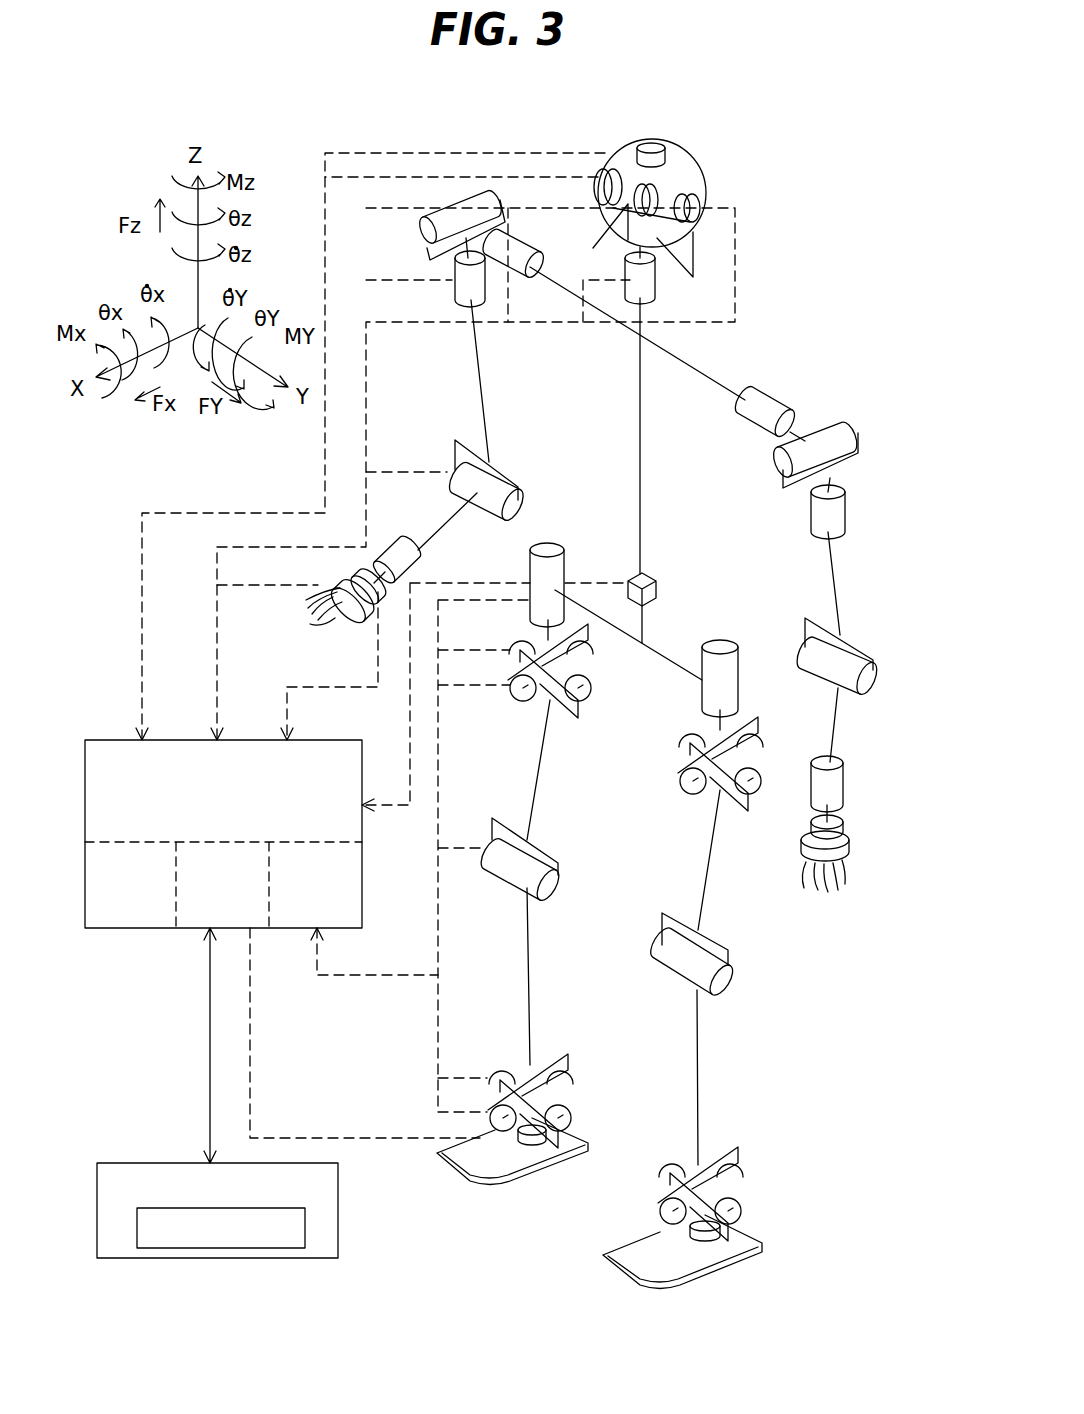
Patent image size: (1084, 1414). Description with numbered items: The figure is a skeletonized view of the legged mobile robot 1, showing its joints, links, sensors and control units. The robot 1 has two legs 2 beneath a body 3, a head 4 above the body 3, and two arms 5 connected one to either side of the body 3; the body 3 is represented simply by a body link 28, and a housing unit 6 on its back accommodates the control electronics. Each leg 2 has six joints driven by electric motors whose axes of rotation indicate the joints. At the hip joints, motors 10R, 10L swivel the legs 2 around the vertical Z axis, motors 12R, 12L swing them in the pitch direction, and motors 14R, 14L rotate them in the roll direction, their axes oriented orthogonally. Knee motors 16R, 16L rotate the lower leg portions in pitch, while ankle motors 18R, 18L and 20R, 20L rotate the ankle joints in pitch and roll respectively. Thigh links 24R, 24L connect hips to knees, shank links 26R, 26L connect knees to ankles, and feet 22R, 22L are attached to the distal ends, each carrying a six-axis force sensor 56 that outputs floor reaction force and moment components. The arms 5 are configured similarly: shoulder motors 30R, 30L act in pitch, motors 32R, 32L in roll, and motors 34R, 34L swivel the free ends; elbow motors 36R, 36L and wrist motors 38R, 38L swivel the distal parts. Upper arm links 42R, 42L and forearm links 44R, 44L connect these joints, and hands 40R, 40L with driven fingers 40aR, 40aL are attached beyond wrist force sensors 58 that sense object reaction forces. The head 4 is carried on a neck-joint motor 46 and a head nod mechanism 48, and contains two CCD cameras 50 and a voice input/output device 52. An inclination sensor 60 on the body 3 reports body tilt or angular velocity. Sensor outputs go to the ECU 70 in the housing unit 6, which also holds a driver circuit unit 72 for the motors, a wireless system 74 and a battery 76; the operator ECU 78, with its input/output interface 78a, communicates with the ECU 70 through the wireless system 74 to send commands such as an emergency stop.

The legged mobile robot 1 is at (798, 323).
The legs 2 is at (758, 926).
The body 3 is at (675, 456).
The head 4 is at (666, 176).
The arms 5 is at (880, 626).
The housing unit 6 is at (223, 796).
The electric motor 10R is at (552, 556).
The electric motor 10L is at (729, 678).
The electric motor 12R is at (520, 677).
The electric motor 12L is at (758, 790).
The electric motor 14R is at (518, 706).
The electric motor 14L is at (747, 778).
The electric motor 16R is at (560, 882).
The electric motor 16L is at (728, 976).
The electric motor 18R is at (569, 1077).
The electric motor 18L is at (739, 1180).
The electric motor 20R is at (552, 1070).
The electric motor 20L is at (736, 1172).
The foot 22R is at (497, 1173).
The foot 22L is at (761, 1245).
The thigh link 24R is at (537, 797).
The thigh link 24L is at (706, 876).
The shank link 26R is at (521, 944).
The shank link 26L is at (701, 1061).
The body link 28 is at (643, 512).
The electric motor 30R is at (513, 252).
The electric motor 30L is at (762, 400).
The electric motor 32R is at (490, 208).
The electric motor 32L is at (832, 440).
The electric motor 34R is at (458, 286).
The electric motor 34L is at (845, 514).
The electric motor 36R is at (519, 498).
The electric motor 36L is at (872, 670).
The electric motor 38R is at (418, 561).
The electric motor 38L is at (845, 786).
The hand 40R is at (300, 628).
The hand 40L is at (866, 889).
The fingers 40aR is at (290, 626).
The fingers 40aL is at (858, 890).
The upper arm link 42R is at (485, 401).
The upper arm link 42L is at (838, 572).
The forearm link 44R is at (441, 522).
The forearm link 44L is at (838, 737).
The electric motor 46 is at (655, 291).
The head nod mechanism 48 is at (694, 212).
The CCD cameras 50 is at (605, 236).
The voice input/output device 52 is at (646, 146).
The six-axis force sensor 56 is at (541, 1141).
The six-axis force sensor 58 is at (355, 578).
The inclination sensor 60 is at (658, 584).
The electronic control unit 70 is at (223, 834).
The driver circuit unit 72 is at (130, 885).
The wireless system 74 is at (222, 887).
The battery 76 is at (315, 875).
The operator ECU 78 is at (256, 1210).
The input/output interface 78a is at (305, 1233).